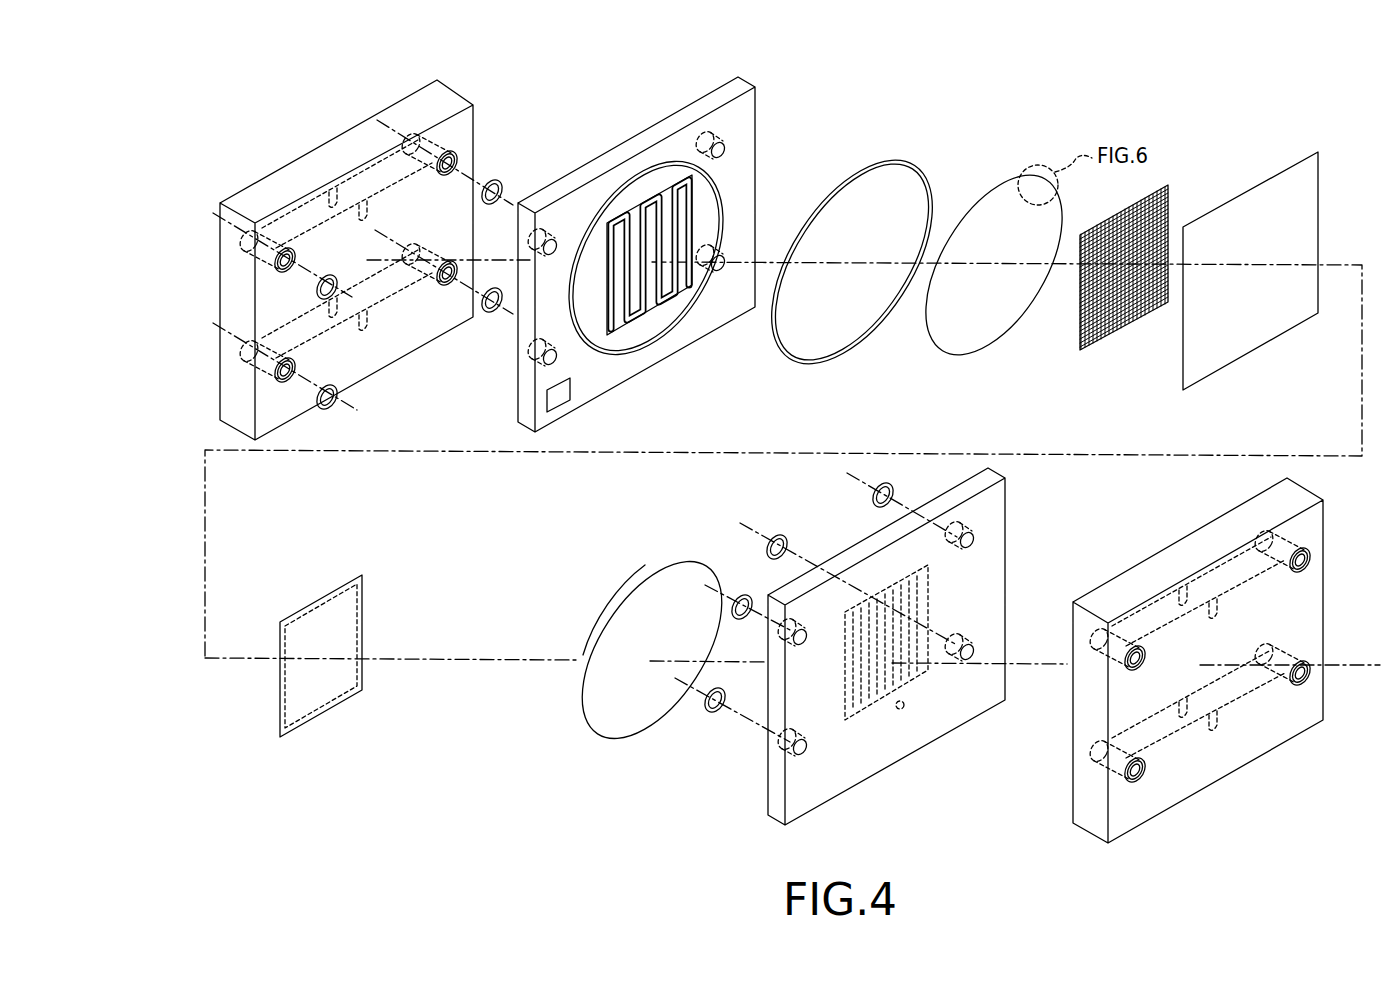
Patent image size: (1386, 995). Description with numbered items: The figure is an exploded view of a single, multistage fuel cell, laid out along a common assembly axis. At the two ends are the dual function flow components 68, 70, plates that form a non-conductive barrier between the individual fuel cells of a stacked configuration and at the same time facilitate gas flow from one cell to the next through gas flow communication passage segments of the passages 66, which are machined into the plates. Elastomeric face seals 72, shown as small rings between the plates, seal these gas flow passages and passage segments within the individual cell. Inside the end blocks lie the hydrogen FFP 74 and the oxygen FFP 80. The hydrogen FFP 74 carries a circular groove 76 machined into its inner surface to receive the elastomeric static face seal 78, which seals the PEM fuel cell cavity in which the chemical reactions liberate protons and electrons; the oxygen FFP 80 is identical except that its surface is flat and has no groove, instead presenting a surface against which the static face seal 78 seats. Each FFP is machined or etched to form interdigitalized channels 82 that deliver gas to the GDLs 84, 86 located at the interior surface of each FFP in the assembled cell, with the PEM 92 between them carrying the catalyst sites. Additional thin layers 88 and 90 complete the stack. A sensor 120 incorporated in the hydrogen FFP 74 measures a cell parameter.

The passages 66 is at (240, 363).
The dual function flow component 68 is at (443, 93).
The dual function flow component 70 is at (1318, 518).
The elastomeric face seals 72 is at (496, 181).
The hydrogen FFP 74 is at (755, 103).
The circular groove 76 is at (662, 160).
The elastomeric static face seal 78 is at (883, 158).
The oxygen FFP 80 is at (1007, 515).
The interdigitalized channels 82 is at (692, 220).
The GDL 84 is at (657, 567).
The GDL 86 is at (980, 347).
The gas diffusion layer 88 is at (362, 590).
The mesh screen 90 is at (1167, 185).
The PEM 92 is at (1318, 217).
The sensor 120 is at (570, 382).